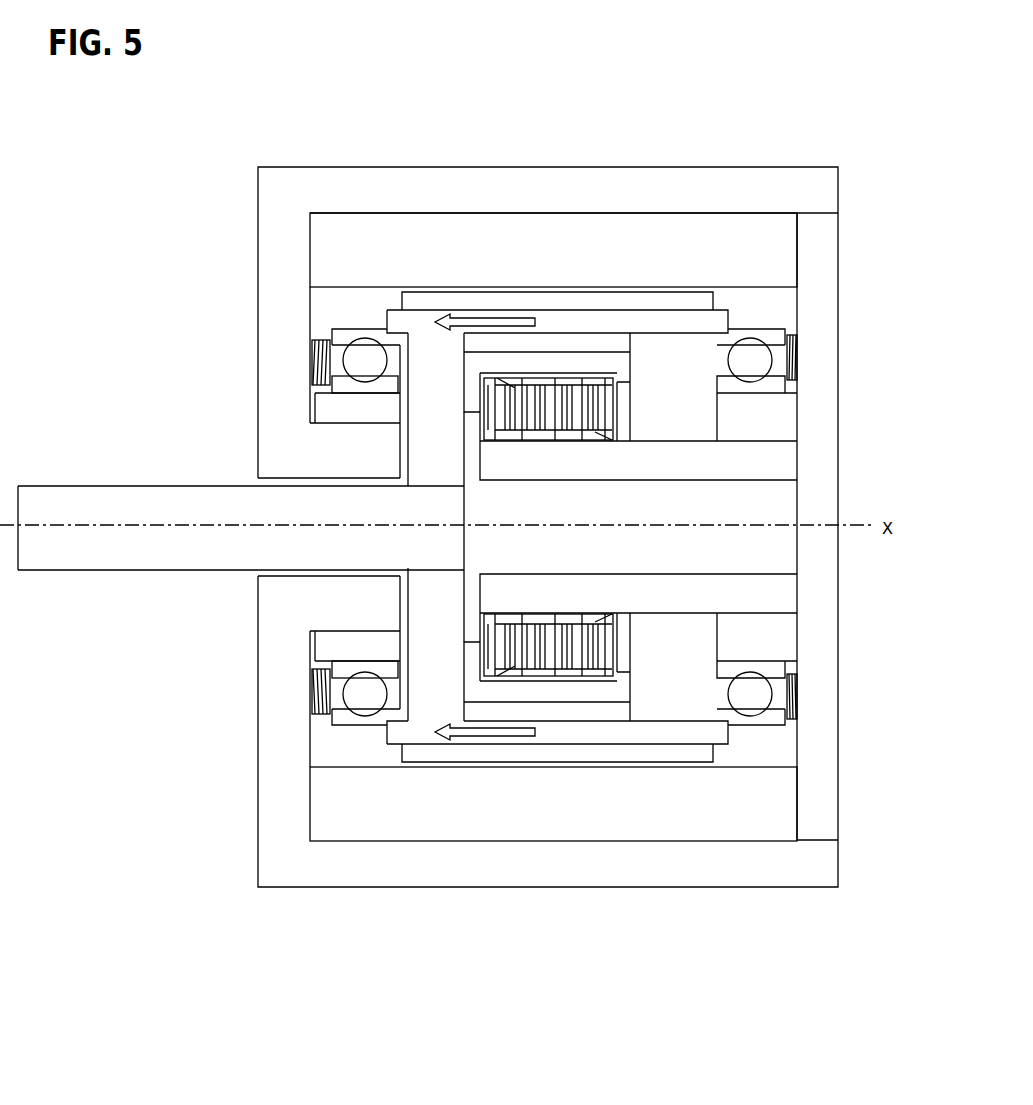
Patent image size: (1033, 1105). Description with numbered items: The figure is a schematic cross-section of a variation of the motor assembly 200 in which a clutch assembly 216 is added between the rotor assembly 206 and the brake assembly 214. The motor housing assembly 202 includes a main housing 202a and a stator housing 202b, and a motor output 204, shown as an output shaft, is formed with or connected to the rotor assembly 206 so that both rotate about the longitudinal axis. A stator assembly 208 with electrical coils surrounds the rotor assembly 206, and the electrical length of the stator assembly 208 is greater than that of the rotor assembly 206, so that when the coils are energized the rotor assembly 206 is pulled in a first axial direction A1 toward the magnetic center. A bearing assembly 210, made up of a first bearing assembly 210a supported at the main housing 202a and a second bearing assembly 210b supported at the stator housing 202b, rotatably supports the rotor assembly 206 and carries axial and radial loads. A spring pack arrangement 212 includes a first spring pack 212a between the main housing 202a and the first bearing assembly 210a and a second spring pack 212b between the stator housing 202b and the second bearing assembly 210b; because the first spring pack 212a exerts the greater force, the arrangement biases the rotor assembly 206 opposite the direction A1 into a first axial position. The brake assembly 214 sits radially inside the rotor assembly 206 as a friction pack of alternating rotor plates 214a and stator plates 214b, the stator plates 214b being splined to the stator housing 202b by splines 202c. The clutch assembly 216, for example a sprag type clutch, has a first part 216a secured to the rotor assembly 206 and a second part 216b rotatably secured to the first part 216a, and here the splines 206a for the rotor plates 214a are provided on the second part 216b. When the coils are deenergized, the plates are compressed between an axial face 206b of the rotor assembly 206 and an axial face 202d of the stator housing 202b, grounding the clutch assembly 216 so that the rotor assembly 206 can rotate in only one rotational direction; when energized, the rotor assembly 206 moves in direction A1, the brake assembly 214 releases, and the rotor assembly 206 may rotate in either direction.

The motor assembly 200 is at (212, 148).
The motor housing assembly 202 is at (513, 175).
The main housing 202a is at (603, 196).
The stator housing 202b is at (838, 243).
The splines 202c is at (499, 675).
The axial face of the stator housing 202d is at (618, 652).
The motor output 204 is at (150, 497).
The rotor assembly 206 is at (636, 322).
The splines 206a is at (585, 685).
The axial face of the rotor assembly 206b is at (463, 675).
The stator assembly 208 is at (492, 232).
The bearing assembly 210 is at (377, 333).
The first bearing assembly 210a is at (357, 333).
The second bearing assembly 210b is at (778, 335).
The spring pack arrangement 212 is at (313, 343).
The first spring pack 212a is at (312, 370).
The second spring pack 212b is at (797, 367).
The brake assembly 214 is at (560, 695).
The rotor plates 214a is at (612, 663).
The stator plates 214b is at (490, 665).
The clutch assembly 216 is at (553, 680).
The first part 216a is at (528, 713).
The second part 216b is at (550, 697).
The first axial direction A1 is at (497, 319).